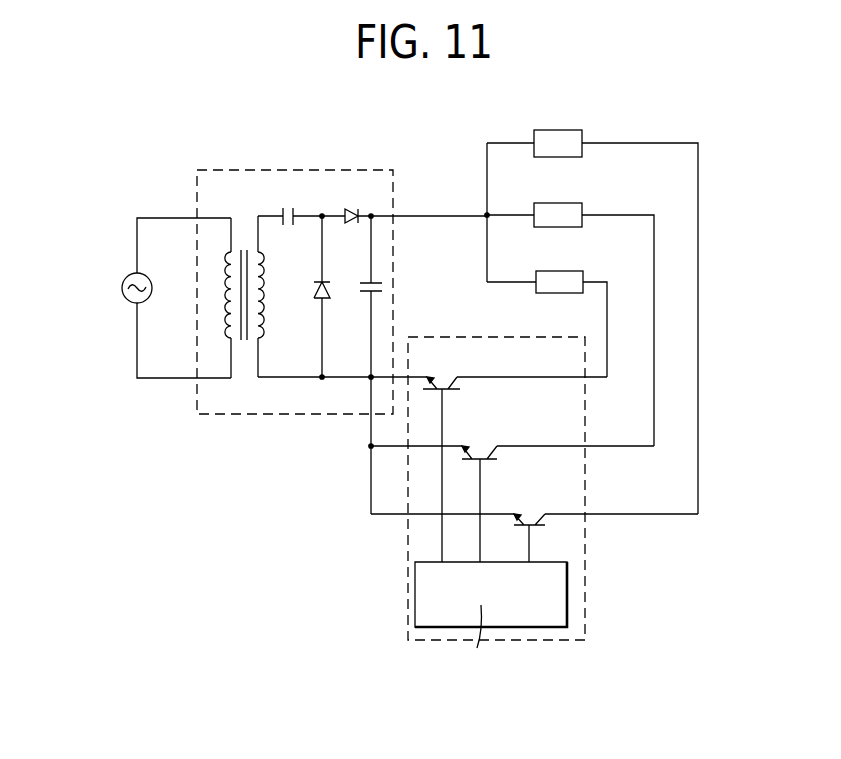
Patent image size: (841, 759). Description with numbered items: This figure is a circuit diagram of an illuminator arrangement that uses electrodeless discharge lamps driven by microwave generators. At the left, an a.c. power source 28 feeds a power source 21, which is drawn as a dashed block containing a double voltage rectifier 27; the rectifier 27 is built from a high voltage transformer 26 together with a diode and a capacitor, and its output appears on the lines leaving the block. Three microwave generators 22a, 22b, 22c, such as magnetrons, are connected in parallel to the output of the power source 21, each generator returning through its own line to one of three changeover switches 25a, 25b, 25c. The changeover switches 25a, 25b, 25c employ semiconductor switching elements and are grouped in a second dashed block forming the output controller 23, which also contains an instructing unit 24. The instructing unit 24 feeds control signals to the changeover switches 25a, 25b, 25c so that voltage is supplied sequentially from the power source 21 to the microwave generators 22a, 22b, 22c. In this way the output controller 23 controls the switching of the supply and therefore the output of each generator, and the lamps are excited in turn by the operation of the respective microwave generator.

The power source 21 is at (197, 414).
The microwave generator 22a is at (568, 130).
The microwave generator 22b is at (568, 203).
The microwave generator 22c is at (565, 271).
The output controller 23 is at (410, 562).
The instructing unit 24 is at (567, 580).
The changeover switch 25a is at (530, 514).
The changeover switch 25b is at (474, 447).
The changeover switch 25c is at (440, 380).
The high voltage transformer 26 is at (241, 246).
The double voltage rectifier 27 is at (345, 357).
The a.c. power source 28 is at (122, 288).